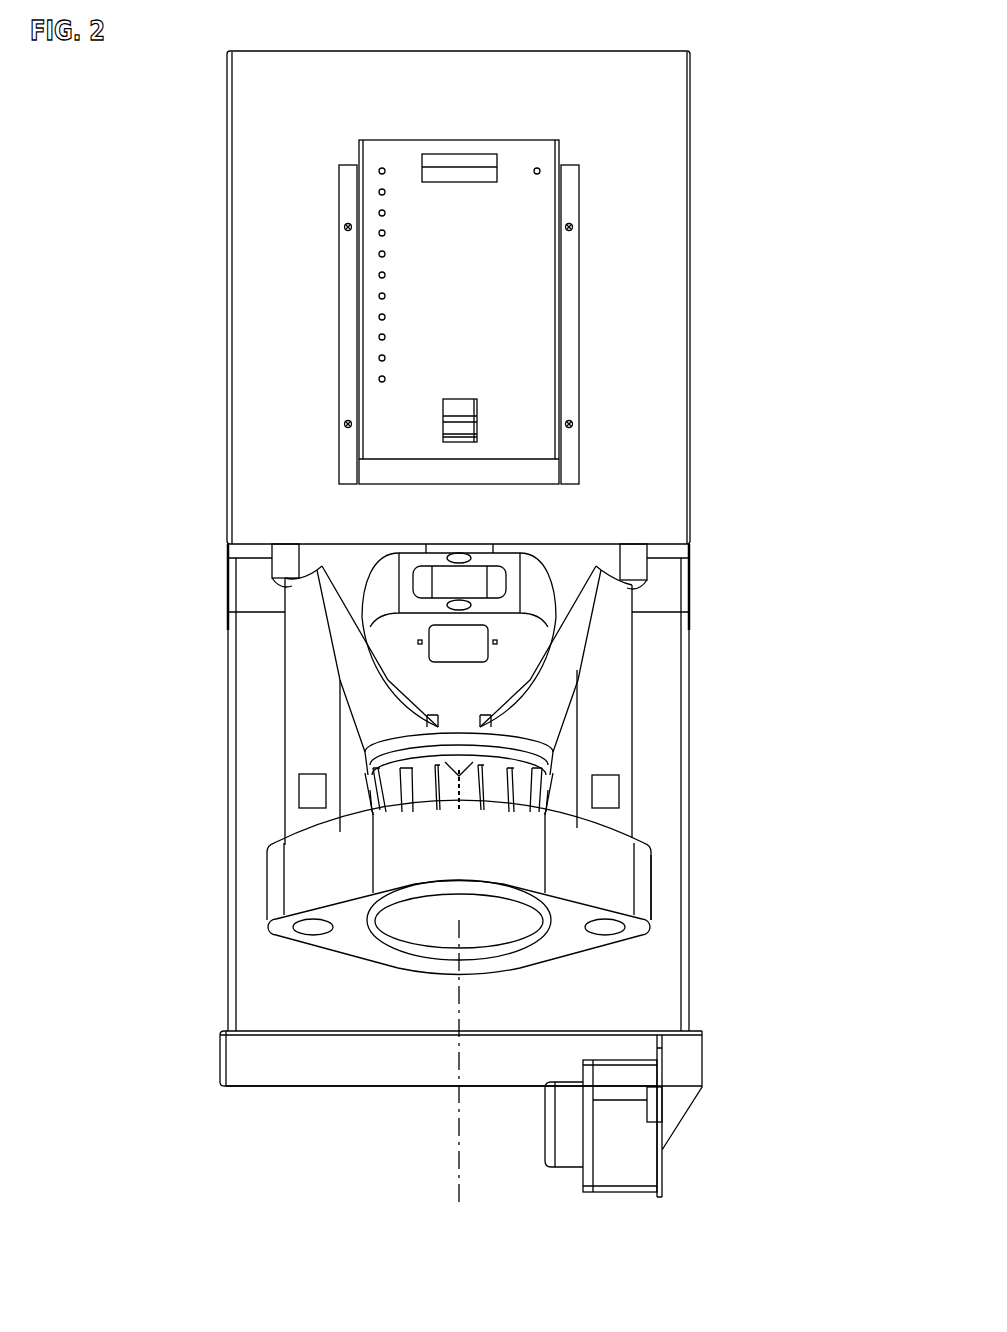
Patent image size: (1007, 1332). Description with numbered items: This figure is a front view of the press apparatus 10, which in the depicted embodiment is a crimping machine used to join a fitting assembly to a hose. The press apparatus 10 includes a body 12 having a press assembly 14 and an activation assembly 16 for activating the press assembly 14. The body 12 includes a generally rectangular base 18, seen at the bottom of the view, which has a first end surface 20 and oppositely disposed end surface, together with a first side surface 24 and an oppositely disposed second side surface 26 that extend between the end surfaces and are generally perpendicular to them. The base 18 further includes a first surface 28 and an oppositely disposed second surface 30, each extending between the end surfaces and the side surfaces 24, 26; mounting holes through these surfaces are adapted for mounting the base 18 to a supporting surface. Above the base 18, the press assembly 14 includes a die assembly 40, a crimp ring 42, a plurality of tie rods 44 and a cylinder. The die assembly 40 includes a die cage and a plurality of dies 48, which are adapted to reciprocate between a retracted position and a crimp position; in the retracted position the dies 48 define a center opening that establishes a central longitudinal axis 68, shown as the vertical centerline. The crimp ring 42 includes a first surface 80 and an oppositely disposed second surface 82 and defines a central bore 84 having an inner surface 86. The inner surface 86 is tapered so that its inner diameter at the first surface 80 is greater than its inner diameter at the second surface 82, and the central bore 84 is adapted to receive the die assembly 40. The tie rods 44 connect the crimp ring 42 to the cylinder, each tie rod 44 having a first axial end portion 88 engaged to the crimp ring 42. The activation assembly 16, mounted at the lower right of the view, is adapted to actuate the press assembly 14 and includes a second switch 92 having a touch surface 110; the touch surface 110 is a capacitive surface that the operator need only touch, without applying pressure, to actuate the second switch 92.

The press apparatus 10 is at (88, 200).
The body 12 is at (198, 380).
The press assembly 14 is at (740, 590).
The activation assembly 16 is at (730, 1113).
The base 18 is at (203, 1057).
The first end surface 20 is at (416, 1063).
The first side surface 24 is at (697, 1030).
The second side surface 26 is at (216, 1038).
The first surface 28 is at (317, 1032).
The second surface 30 is at (358, 1086).
The die assembly 40 is at (563, 783).
The crimp ring 42 is at (653, 870).
The tie rods 44 is at (270, 720).
The dies 48 is at (555, 803).
The central longitudinal axis 68 is at (458, 998).
The first surface 80 is at (618, 835).
The second surface 82 is at (459, 943).
The central bore 84 is at (510, 935).
The inner surface 86 is at (372, 917).
The first axial end portion 88 is at (284, 822).
The second switch 92 is at (533, 1175).
The touch surface 110 is at (545, 1127).